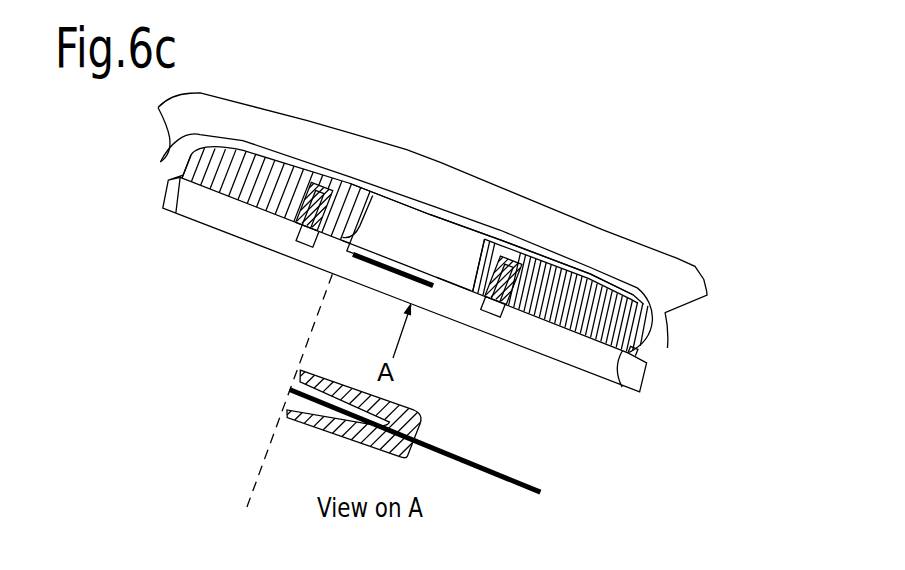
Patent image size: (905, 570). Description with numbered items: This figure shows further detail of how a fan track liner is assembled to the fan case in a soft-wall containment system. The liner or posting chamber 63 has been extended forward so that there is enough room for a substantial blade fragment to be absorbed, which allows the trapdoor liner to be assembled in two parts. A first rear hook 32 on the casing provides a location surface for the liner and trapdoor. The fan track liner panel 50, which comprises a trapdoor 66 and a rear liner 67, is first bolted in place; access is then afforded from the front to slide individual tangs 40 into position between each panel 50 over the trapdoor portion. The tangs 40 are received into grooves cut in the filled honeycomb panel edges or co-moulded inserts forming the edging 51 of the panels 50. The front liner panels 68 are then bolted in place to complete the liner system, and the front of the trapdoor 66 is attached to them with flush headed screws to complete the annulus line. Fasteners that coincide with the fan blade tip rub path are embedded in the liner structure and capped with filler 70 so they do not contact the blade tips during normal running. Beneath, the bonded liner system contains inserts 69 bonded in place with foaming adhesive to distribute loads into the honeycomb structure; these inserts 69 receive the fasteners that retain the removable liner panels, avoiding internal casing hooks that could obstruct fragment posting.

The posting chamber 63 is at (253, 176).
The insert 69 is at (320, 181).
The first rear hook 32 is at (373, 195).
The trapdoor 66 is at (427, 252).
The front liner panel 68 is at (221, 219).
The filler 70 is at (300, 258).
The tang 40 is at (393, 264).
The rear liner 67 is at (567, 347).
The fan track liner panel 50 is at (493, 428).
The edging 51 is at (388, 456).